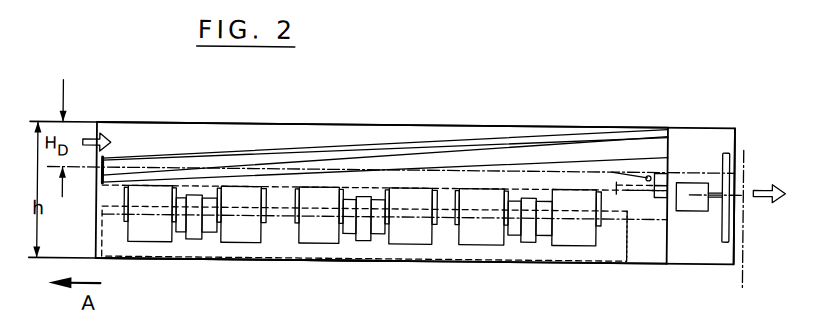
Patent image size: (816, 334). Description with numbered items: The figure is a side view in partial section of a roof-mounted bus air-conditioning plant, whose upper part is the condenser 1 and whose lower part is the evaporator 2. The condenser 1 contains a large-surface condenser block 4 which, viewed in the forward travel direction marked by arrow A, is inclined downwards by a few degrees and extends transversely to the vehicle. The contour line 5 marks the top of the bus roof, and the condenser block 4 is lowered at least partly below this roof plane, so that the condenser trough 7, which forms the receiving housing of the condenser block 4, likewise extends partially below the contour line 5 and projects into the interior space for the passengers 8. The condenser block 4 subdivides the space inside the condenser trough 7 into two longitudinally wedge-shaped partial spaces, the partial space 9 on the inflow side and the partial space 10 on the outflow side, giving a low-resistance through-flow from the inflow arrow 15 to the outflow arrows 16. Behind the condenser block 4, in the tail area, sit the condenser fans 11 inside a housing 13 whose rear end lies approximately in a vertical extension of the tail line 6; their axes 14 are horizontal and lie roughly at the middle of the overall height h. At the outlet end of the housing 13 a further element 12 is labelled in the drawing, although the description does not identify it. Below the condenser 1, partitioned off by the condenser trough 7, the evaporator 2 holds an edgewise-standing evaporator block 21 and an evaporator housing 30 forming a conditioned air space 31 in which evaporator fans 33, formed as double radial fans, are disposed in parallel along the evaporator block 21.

The condenser 1 is at (383, 121).
The evaporator 2 is at (570, 258).
The large-surface condenser block 4 is at (470, 143).
The contour line of the top of the roof 5 is at (637, 167).
The tail line 6 is at (743, 254).
The condenser trough 7 is at (527, 181).
The interior space for the passengers 8 is at (329, 316).
The partial space 9 is at (150, 142).
The partial space 10 is at (573, 170).
The condenser fans 11 is at (725, 214).
The outlet wall 12 is at (737, 147).
The housing 13 is at (692, 122).
The axes of the condenser fans 14 is at (690, 192).
The inflow arrow 15 is at (85, 140).
The outflow arrows 16 is at (763, 183).
The evaporator block 21 is at (245, 252).
The evaporator housing 30 is at (180, 259).
The conditioned air space 31 is at (648, 233).
The evaporator fans 33 is at (473, 231).